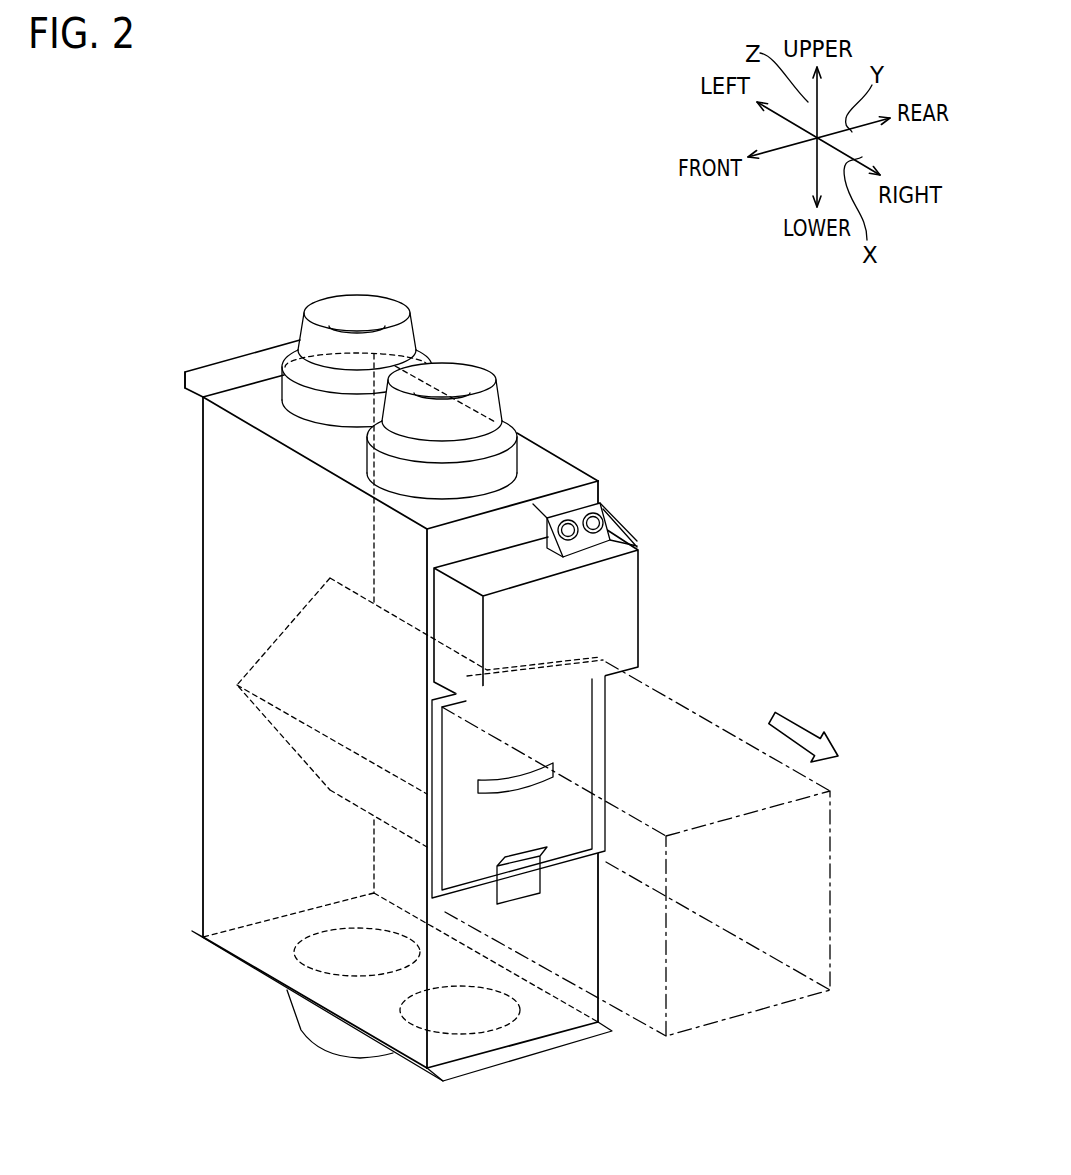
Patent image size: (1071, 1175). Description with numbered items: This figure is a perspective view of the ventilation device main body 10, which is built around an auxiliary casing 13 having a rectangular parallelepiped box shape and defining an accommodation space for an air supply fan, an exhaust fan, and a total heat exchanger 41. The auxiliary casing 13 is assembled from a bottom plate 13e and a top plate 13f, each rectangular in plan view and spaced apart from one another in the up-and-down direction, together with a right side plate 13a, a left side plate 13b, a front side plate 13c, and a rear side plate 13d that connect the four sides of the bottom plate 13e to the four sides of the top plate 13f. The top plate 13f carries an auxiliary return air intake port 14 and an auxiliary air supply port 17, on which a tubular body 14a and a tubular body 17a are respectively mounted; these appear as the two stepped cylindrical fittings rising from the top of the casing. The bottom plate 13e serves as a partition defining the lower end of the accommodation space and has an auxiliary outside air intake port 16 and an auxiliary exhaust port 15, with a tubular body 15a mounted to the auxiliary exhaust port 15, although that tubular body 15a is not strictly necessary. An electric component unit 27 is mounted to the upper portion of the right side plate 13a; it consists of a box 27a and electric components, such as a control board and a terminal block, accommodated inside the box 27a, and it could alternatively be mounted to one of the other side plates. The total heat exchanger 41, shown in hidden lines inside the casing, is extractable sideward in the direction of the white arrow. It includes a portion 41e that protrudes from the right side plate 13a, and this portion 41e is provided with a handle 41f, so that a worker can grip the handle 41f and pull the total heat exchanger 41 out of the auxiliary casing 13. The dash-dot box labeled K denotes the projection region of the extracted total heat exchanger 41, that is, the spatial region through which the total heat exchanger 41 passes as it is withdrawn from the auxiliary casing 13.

The ventilation device main body 10 is at (176, 326).
The auxiliary casing 13 is at (198, 474).
The right side plate 13a is at (537, 1020).
The left side plate 13b is at (203, 763).
The front side plate 13c is at (263, 815).
The rear side plate 13d is at (602, 1012).
The bottom plate 13e is at (240, 967).
The top plate 13f is at (553, 470).
The auxiliary return air intake port 14 is at (377, 349).
The tubular body 14a is at (345, 312).
The auxiliary exhaust port 15 is at (342, 1029).
The tubular body 15a is at (343, 1058).
The auxiliary outside air intake port 16 is at (470, 1027).
The auxiliary air supply port 17 is at (454, 383).
The tubular body 17a is at (462, 380).
The electric component unit 27 is at (591, 605).
The box 27a is at (641, 615).
The total heat exchanger 41 is at (280, 635).
The portion protruding from the right side plate 41e is at (598, 760).
The handle 41f is at (520, 778).
The projection region K is at (832, 883).